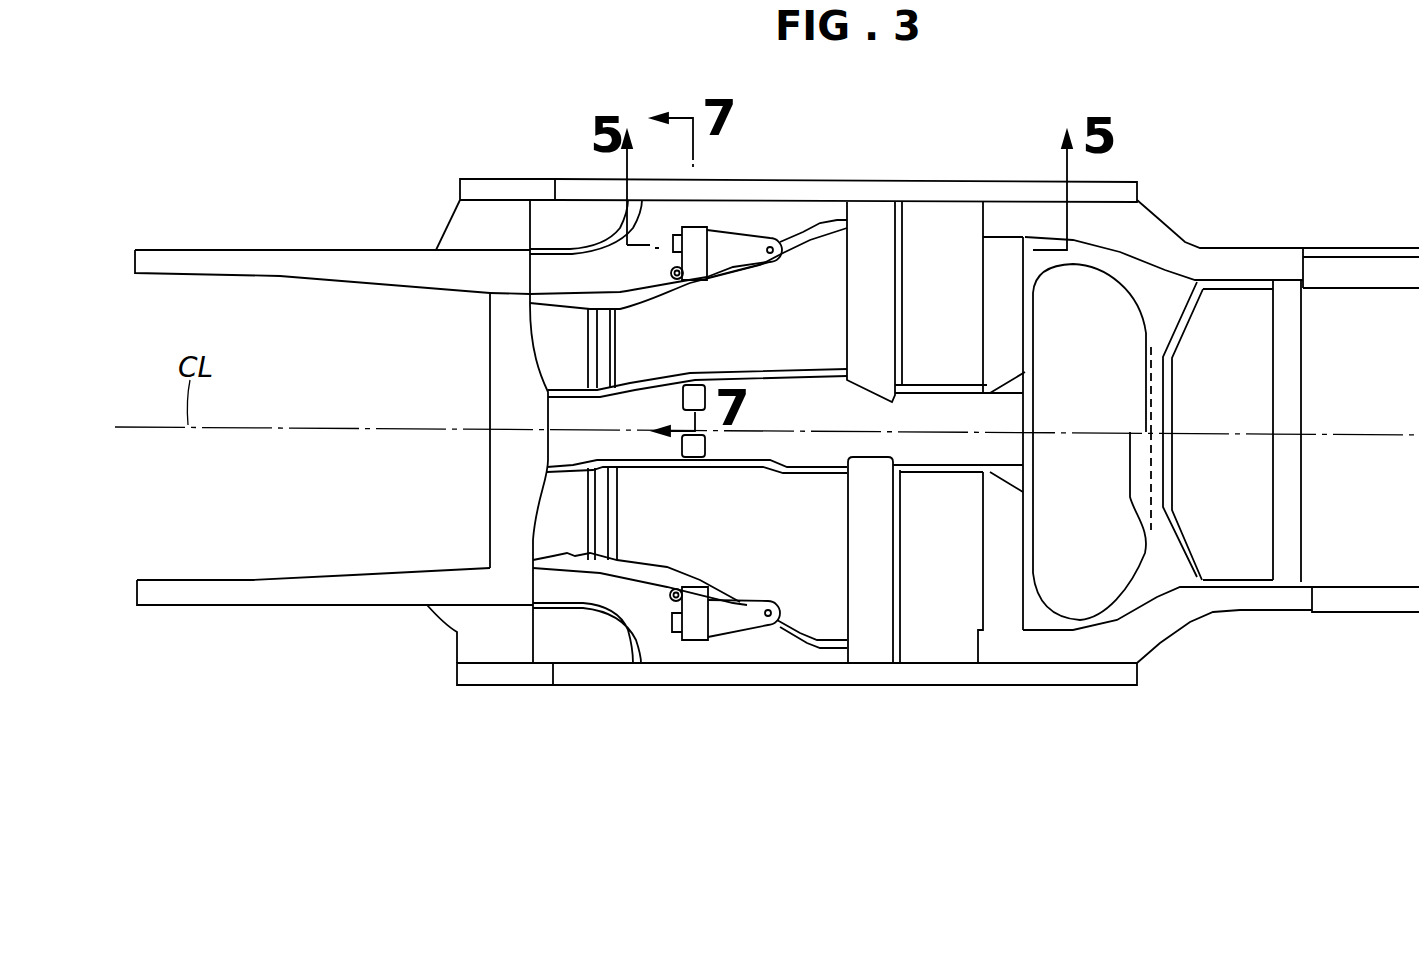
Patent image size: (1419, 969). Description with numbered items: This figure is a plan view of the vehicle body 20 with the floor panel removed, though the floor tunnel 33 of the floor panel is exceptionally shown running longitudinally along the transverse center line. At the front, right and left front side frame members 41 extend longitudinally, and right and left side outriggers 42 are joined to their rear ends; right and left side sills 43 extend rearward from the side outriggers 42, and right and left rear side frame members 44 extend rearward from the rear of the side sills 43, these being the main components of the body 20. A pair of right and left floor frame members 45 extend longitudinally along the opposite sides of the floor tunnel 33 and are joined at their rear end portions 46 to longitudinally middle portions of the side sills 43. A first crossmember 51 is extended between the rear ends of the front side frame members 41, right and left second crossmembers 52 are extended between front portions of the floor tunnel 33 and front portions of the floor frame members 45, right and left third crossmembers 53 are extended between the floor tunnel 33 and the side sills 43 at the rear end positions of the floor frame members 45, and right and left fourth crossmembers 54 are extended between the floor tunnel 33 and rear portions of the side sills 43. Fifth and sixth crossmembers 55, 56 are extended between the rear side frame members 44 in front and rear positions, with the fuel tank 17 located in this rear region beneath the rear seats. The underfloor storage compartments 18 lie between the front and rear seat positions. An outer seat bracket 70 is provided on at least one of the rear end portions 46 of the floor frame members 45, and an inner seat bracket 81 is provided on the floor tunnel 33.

The body 20 is at (254, 146).
The front side frame member 41 is at (305, 262).
The side outrigger 42 is at (460, 228).
The side sill 43 is at (488, 183).
The rear side frame member 44 is at (1243, 262).
The floor frame member 45 is at (570, 268).
The rear end portion 46 is at (790, 212).
The fuel tank 17 is at (1113, 300).
The underfloor storage compartment 18 is at (935, 234).
The first crossmember 51 is at (503, 389).
The second crossmember 52 is at (603, 335).
The third crossmember 53 is at (860, 297).
The fourth crossmember 54 is at (995, 303).
The fifth crossmember 55 is at (1172, 390).
The sixth crossmember 56 is at (1301, 390).
The outer seat bracket 70 is at (700, 227).
The inner seat bracket 81 is at (698, 383).
The floor tunnel 33 is at (795, 450).